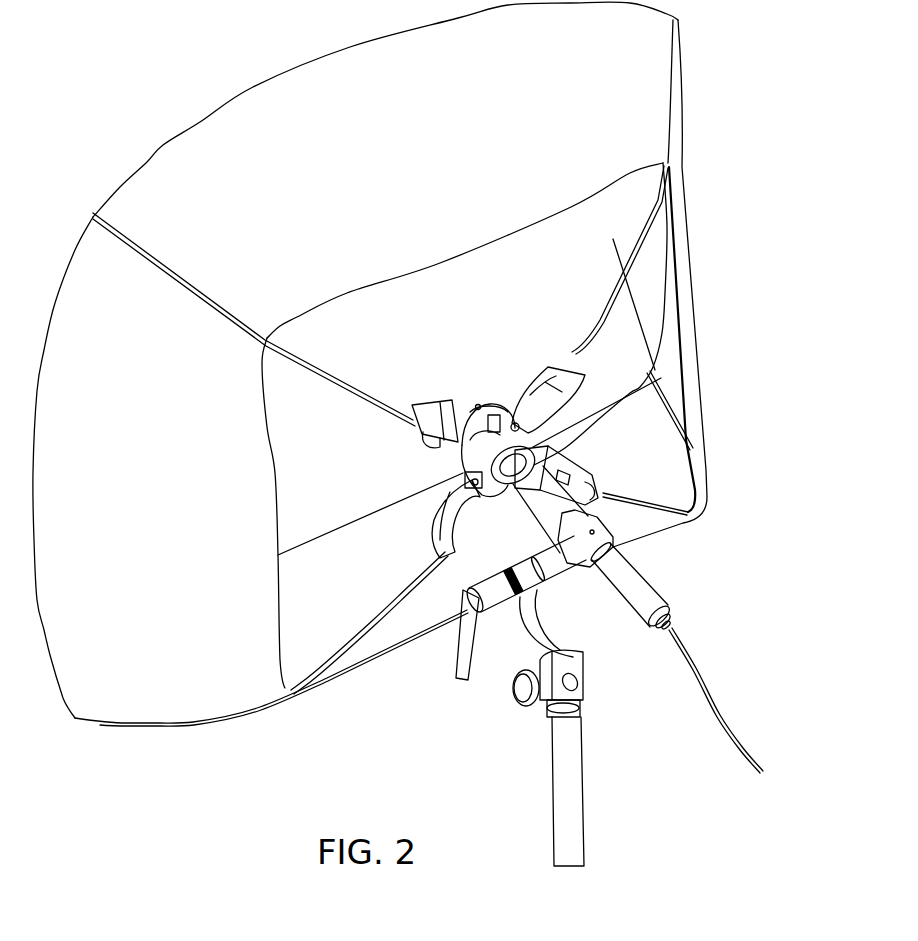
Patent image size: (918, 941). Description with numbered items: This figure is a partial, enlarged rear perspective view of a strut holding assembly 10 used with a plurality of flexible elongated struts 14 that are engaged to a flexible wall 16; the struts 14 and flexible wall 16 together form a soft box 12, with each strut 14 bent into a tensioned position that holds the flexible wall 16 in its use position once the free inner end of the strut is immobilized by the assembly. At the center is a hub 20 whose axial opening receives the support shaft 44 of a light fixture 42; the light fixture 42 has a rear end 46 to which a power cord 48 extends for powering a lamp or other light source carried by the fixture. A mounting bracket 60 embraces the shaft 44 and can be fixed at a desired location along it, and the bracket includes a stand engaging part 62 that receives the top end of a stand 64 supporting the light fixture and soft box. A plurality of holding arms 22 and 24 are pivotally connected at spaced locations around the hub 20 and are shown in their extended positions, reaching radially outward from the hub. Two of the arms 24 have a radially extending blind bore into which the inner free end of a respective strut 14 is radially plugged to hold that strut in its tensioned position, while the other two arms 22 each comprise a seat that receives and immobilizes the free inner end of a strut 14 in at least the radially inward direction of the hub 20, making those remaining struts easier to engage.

The strut holding assembly 10 is at (498, 380).
The light modifier 12 is at (683, 535).
The flexible elongated strut 14 is at (334, 376).
The flexible wall 16 is at (184, 523).
The hub 20 is at (466, 465).
The holding arm 22 is at (440, 403).
The holding arm 24 is at (583, 382).
The light fixture 42 is at (478, 405).
The support shaft 44 is at (550, 503).
The rear end 46 is at (648, 597).
The power cord 48 is at (722, 717).
The mounting bracket 60 is at (534, 599).
The stand engaging part 62 is at (580, 679).
The stand 64 is at (578, 760).